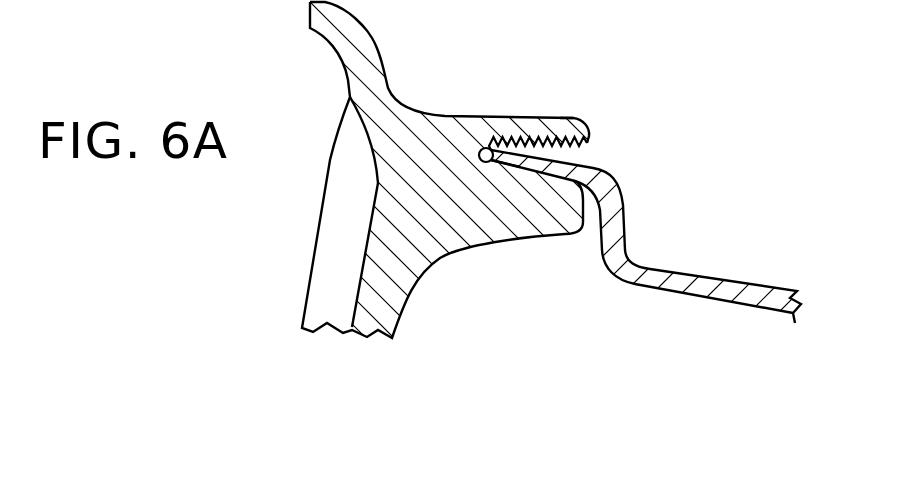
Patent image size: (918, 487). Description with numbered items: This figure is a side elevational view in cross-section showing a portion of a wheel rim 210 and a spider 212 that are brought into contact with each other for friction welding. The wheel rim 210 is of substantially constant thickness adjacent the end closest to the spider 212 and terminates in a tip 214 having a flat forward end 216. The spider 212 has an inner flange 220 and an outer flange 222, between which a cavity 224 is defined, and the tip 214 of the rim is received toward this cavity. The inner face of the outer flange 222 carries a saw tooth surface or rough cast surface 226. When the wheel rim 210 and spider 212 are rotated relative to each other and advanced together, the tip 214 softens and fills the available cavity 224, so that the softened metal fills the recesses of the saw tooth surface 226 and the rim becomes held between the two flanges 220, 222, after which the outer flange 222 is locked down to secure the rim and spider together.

The wheel rim 210 is at (701, 304).
The spider 212 is at (308, 242).
The tip 214 is at (530, 162).
The flat forward end 216 is at (483, 148).
The inner flange 220 is at (552, 210).
The outer flange 222 is at (578, 119).
The cavity 224 is at (506, 162).
The saw tooth surface 226 is at (570, 146).